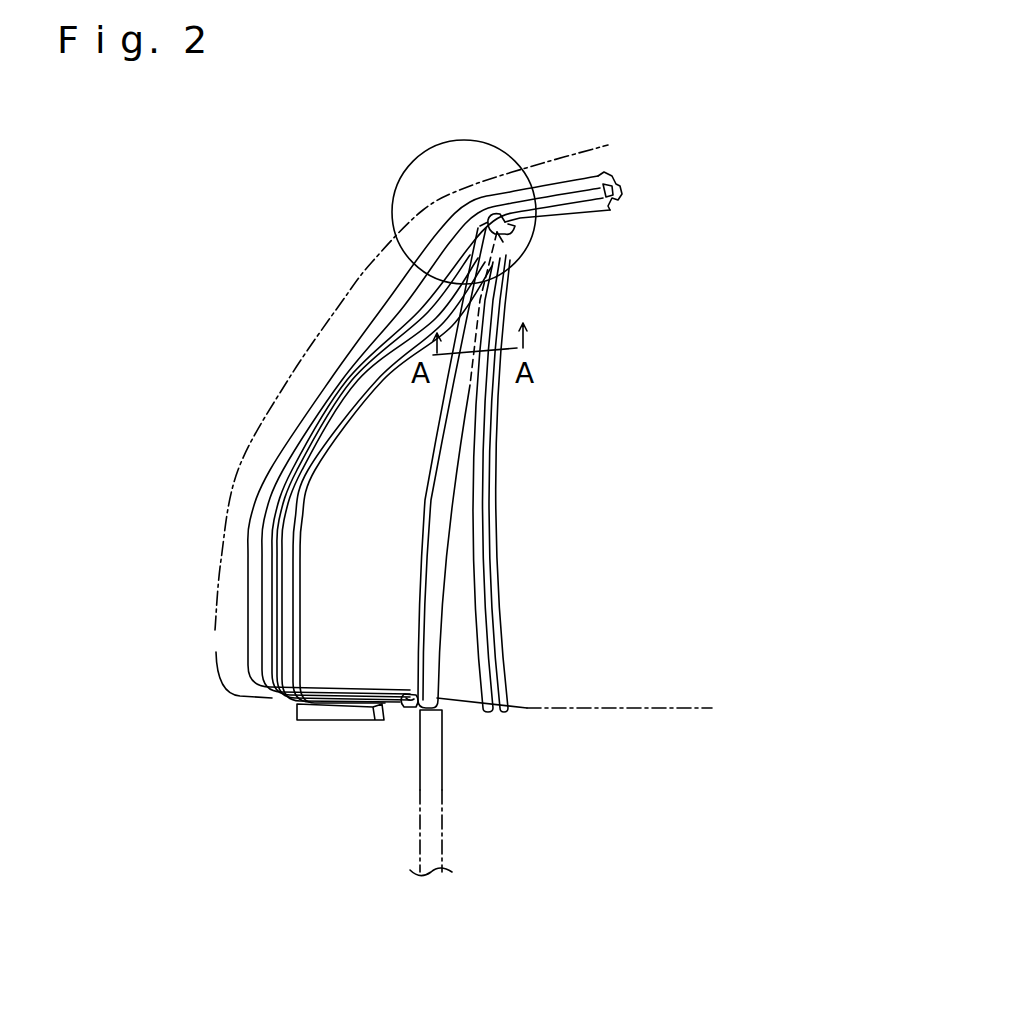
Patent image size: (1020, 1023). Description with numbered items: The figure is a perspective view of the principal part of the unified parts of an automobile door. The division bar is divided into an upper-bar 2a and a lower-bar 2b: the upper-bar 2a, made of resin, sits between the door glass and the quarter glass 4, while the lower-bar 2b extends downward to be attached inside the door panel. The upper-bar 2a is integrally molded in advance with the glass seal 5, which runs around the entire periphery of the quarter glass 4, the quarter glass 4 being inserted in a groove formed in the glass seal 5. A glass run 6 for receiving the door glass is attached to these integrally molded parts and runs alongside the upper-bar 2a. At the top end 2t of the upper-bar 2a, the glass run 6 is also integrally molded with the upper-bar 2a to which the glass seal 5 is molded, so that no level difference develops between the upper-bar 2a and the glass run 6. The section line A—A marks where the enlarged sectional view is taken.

The top end of the upper-bar 2t is at (397, 153).
The upper-bar 2a is at (455, 415).
The lower-bar 2b is at (442, 775).
The quarter glass 4 is at (307, 595).
The glass seal 5 is at (290, 435).
The glass run 6 is at (580, 186).